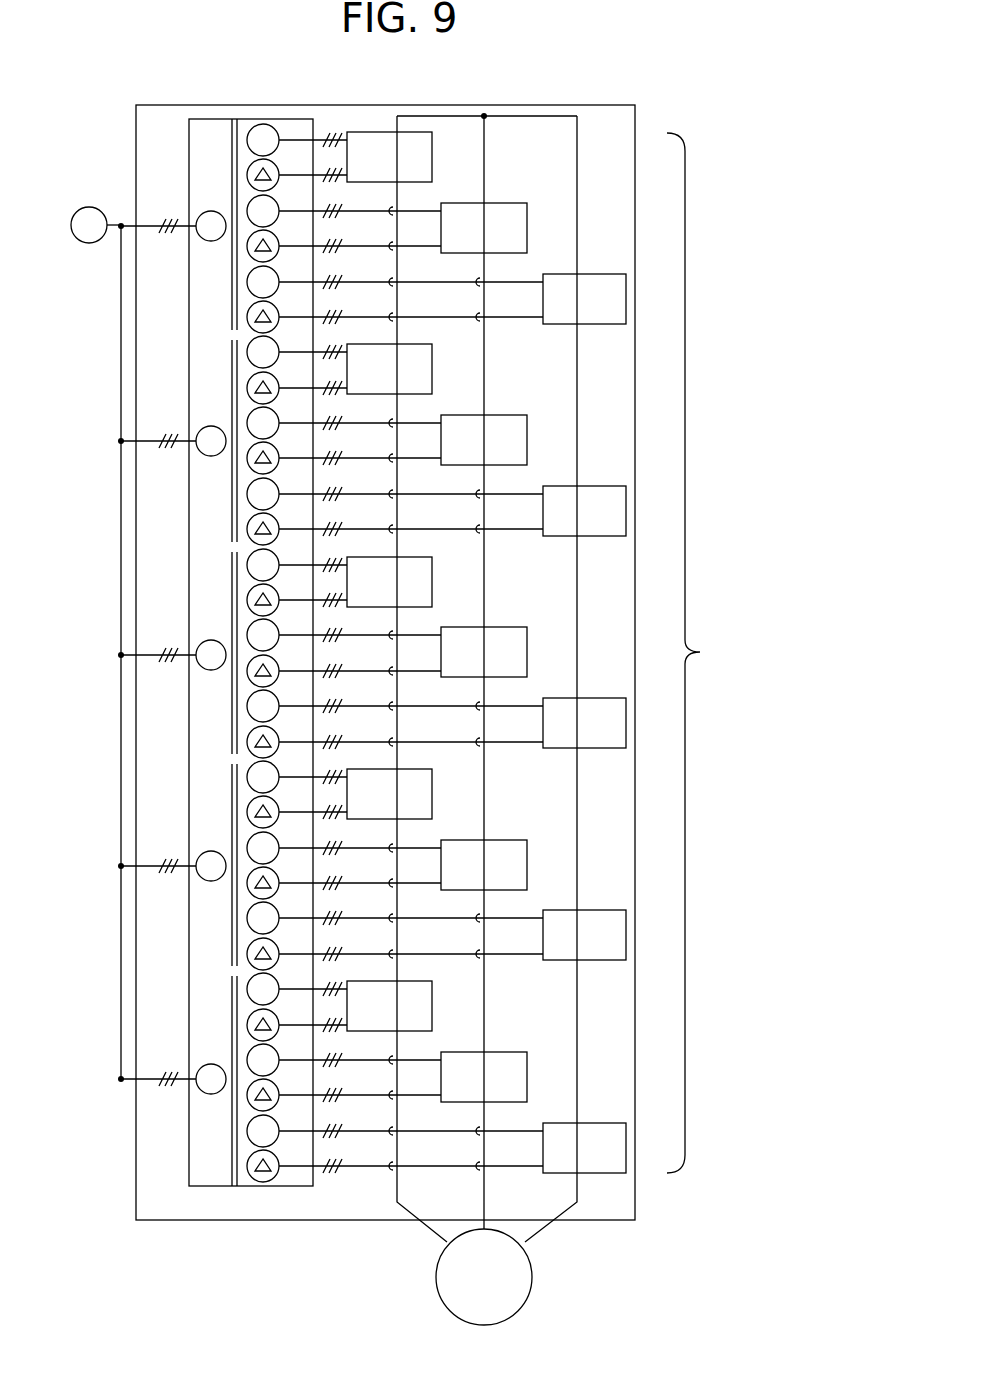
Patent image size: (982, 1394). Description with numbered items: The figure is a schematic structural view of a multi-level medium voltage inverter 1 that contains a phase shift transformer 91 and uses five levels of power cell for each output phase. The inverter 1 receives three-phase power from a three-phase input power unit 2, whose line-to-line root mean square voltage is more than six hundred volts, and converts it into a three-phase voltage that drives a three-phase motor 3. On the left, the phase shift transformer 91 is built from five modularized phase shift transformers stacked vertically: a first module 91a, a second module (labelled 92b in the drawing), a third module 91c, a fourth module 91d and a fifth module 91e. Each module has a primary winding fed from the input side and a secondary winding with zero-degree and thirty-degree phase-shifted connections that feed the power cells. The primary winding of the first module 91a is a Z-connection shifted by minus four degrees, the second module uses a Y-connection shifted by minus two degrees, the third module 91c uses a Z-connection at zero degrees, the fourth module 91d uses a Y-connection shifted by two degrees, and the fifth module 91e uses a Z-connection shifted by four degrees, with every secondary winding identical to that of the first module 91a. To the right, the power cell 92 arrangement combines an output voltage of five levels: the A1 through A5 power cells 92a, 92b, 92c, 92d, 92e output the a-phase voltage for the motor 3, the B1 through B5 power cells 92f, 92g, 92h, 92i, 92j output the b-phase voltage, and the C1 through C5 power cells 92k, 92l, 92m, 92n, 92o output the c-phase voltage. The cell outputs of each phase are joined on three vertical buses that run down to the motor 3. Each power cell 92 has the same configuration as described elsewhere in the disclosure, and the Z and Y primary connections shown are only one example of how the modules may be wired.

The multi-level medium voltage inverter 1 is at (411, 105).
The 3-phase input power unit 2 is at (89, 207).
The 3-phase motor 3 is at (532, 1277).
The phase shift transformer 91 is at (234, 119).
The first module 91a is at (213, 166).
The power cell A2 92b is at (213, 400).
The third module 91c is at (213, 582).
The fourth module 91d is at (213, 824).
The fifth module 91e is at (213, 1007).
The power cell 92 is at (538, 652).
The power cell A1 92a is at (432, 157).
The power cell A3 92c is at (432, 582).
The power cell A4 92d is at (432, 794).
The power cell A5 92e is at (432, 1006).
The power cell B1 92f is at (527, 228).
The power cell B2 92g is at (527, 440).
The power cell B3 92h is at (527, 652).
The power cell B4 92i is at (527, 865).
The power cell B5 92j is at (527, 1077).
The power cell C1 92k is at (626, 299).
The power cell C2 92l is at (626, 511).
The power cell C3 92m is at (626, 723).
The power cell C4 92n is at (626, 935).
The power cell C5 92o is at (626, 1148).